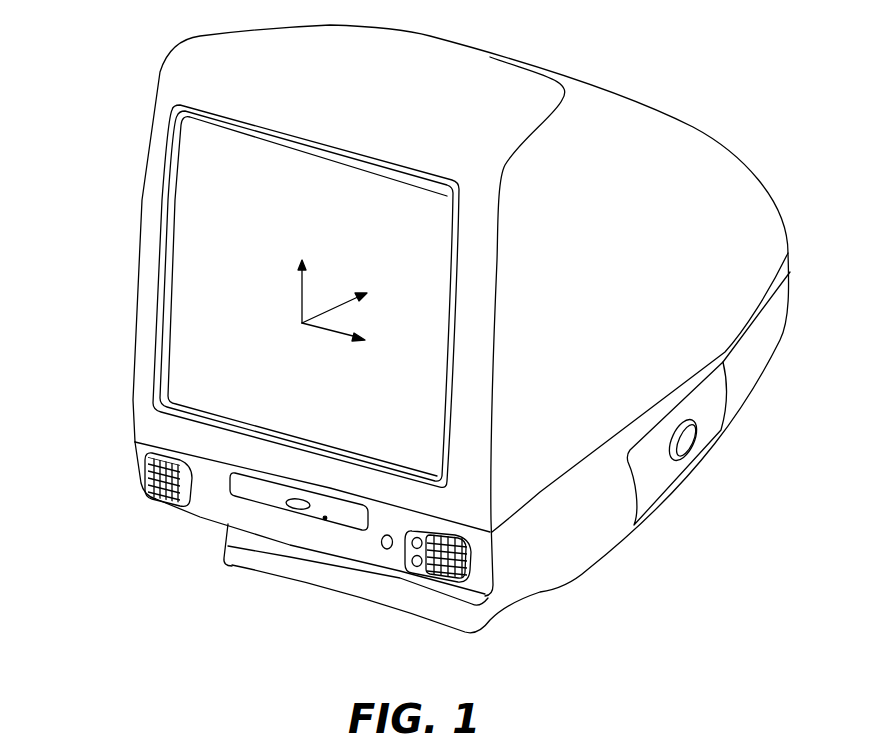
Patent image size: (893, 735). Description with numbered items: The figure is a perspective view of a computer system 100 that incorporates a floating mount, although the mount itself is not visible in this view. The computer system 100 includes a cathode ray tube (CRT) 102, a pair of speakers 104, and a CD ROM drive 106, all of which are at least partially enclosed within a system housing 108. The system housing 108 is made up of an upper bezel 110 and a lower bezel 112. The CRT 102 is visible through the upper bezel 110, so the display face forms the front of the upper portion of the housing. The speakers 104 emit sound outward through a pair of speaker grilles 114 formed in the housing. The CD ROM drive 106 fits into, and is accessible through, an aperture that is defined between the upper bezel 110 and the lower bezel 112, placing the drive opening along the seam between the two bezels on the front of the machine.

The computer system 100 is at (666, 581).
The cathode ray tube (CRT) 102 is at (253, 224).
The speakers 104 is at (147, 482).
The CD ROM drive 106 is at (250, 495).
The system housing 108 is at (487, 55).
The upper bezel 110 is at (478, 290).
The lower bezel 112 is at (362, 556).
The speaker grilles 114 is at (187, 495).